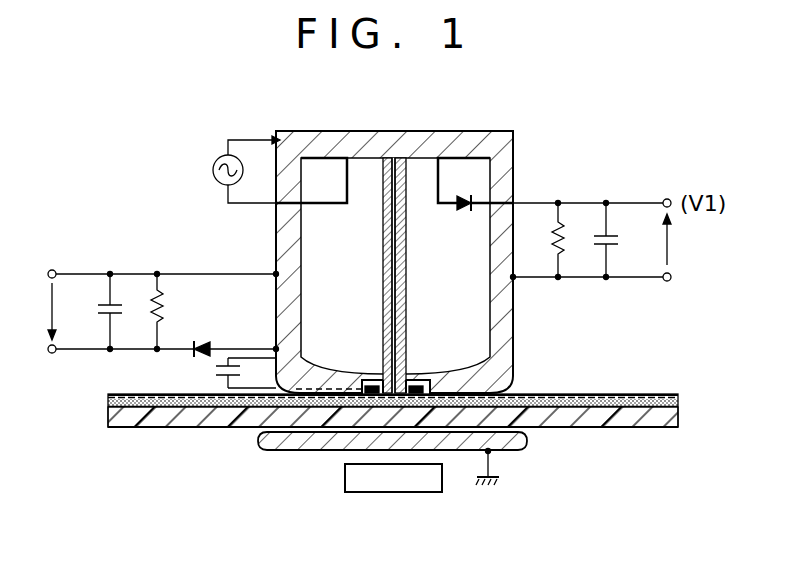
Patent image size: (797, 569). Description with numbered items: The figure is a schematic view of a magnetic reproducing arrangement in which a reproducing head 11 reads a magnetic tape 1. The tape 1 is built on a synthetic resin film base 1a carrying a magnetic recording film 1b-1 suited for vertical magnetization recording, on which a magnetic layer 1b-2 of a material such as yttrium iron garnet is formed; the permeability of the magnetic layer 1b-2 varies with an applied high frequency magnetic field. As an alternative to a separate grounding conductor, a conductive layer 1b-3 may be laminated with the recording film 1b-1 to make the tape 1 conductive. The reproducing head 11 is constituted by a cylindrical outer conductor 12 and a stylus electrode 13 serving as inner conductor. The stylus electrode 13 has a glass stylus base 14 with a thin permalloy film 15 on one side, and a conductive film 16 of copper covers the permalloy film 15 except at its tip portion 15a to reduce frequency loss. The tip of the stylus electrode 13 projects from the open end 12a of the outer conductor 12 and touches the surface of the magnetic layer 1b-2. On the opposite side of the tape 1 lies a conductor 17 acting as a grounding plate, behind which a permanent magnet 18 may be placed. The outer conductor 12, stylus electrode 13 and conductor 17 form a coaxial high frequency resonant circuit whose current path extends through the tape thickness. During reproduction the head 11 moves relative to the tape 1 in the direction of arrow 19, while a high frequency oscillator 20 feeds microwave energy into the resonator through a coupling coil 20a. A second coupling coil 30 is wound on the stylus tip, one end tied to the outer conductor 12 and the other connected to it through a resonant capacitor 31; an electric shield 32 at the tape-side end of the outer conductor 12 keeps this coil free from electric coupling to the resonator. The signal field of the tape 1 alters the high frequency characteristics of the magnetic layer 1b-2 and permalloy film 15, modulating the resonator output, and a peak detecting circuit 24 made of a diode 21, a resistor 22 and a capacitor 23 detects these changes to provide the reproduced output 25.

The magnetic tape 1 is at (684, 388).
The synthetic resin film base 1a is at (680, 420).
The magnetic recording film 1b-1 is at (680, 401).
The magnetic layer 1b-2 is at (645, 393).
The conductive layer 1b-3 is at (606, 418).
The reproducing head 11 is at (568, 322).
The cylindrical outer conductor 12 is at (385, 130).
The open end 12a is at (408, 385).
The stylus electrode 13 is at (356, 303).
The stylus base 14 is at (407, 247).
The permalloy film 15 is at (383, 231).
The tip portion 15a is at (382, 385).
The conductive film 16 is at (383, 262).
The conductor 17 is at (268, 451).
The permanent magnet 18 is at (393, 493).
The arrow 19 is at (575, 373).
The high frequency oscillator 20 is at (212, 170).
The coupling coil 20a is at (322, 203).
The diode 21 is at (211, 347).
The resistor 22 is at (166, 300).
The capacitor 23 is at (97, 310).
The peak detecting circuit 24 is at (183, 272).
The reproduced output 25 is at (44, 306).
The second coupling coil 30 is at (416, 385).
The resonant capacitor 31 is at (214, 370).
The electric shield 32 is at (370, 385).